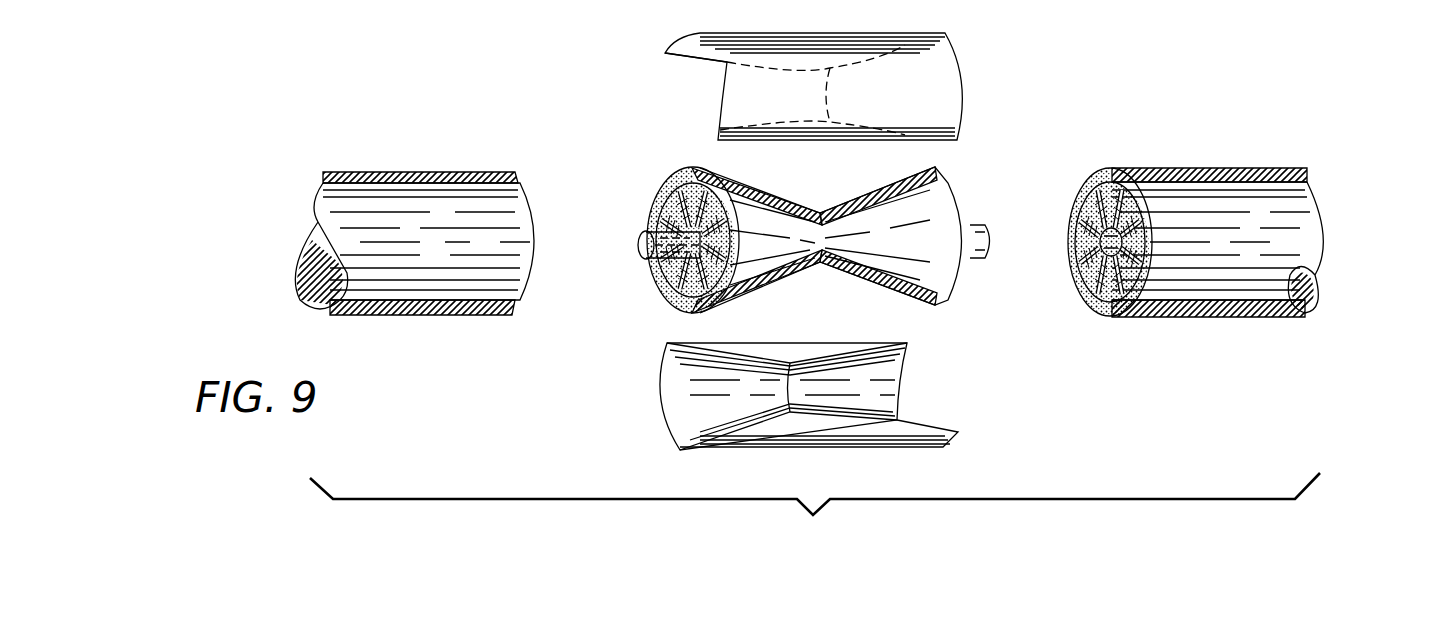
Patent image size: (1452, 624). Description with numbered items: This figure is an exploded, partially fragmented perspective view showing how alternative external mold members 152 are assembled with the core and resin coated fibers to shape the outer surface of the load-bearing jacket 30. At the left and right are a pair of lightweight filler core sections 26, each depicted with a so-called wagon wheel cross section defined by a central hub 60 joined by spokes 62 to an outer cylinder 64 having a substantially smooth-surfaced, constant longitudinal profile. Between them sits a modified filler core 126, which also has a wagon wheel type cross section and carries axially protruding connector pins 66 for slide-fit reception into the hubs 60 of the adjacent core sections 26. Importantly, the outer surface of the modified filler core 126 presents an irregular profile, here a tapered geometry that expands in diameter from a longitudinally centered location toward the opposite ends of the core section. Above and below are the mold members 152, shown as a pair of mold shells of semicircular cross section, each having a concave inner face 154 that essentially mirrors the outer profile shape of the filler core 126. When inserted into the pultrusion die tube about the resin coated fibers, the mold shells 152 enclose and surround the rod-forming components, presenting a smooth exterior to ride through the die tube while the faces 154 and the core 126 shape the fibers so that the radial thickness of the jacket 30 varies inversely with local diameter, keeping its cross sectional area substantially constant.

The lightweight filler core section 26 is at (360, 243).
The load-bearing jacket 30 is at (412, 172).
The central hub 60 is at (1105, 245).
The spokes 62 is at (1100, 215).
The outer cylinder 64 is at (1187, 280).
The connector pin 66 is at (647, 245).
The modified filler core 126 is at (928, 206).
The external mold member 152 is at (940, 68).
The concave inner face 154 is at (680, 395).